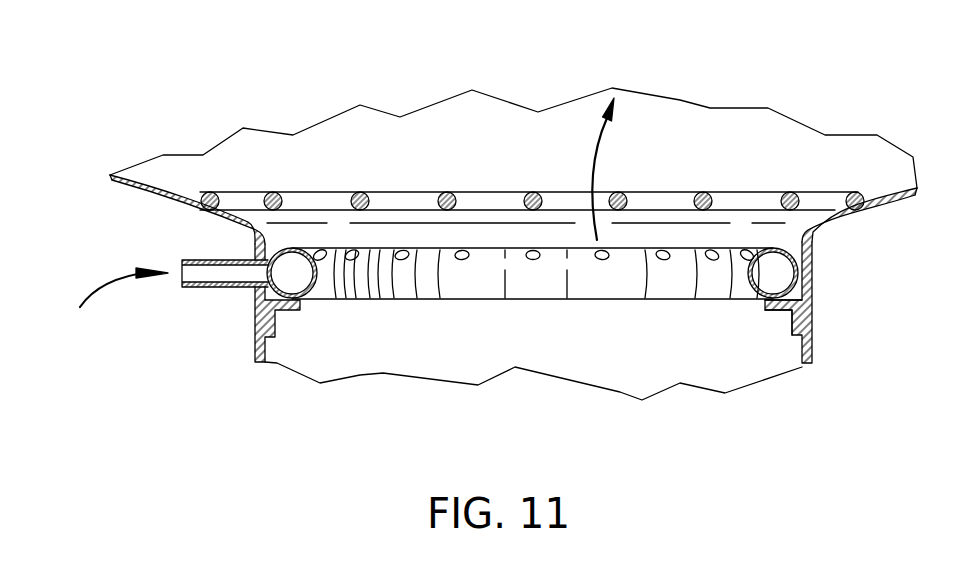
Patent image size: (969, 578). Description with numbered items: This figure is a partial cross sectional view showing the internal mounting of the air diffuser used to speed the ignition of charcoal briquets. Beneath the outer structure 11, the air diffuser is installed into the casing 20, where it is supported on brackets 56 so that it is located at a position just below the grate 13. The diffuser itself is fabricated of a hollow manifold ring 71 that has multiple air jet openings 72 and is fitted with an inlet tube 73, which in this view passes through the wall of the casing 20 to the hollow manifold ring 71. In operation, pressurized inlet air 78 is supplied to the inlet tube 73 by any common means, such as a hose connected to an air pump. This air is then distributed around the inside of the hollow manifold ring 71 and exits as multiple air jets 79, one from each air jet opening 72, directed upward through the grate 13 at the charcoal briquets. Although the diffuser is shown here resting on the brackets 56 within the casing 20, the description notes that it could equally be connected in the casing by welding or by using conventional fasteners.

The aircraft skin / outer structure 11 is at (178, 155).
The grate 13 is at (703, 192).
The casing 20 is at (812, 305).
The brackets 56 is at (777, 310).
The hollow manifold ring 71 is at (423, 302).
The air jet openings 72 is at (600, 259).
The inlet tube 73 is at (198, 262).
The pressurized inlet air 78 is at (106, 285).
The air jets 79 is at (597, 157).